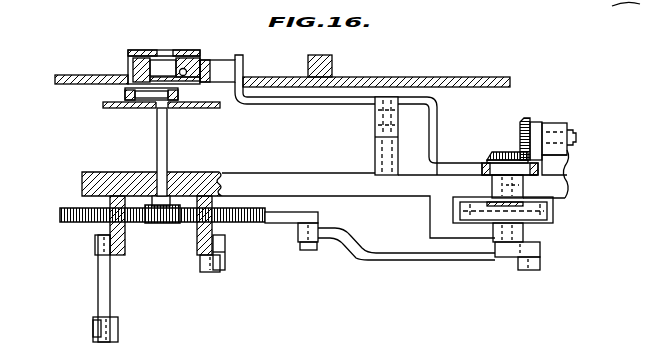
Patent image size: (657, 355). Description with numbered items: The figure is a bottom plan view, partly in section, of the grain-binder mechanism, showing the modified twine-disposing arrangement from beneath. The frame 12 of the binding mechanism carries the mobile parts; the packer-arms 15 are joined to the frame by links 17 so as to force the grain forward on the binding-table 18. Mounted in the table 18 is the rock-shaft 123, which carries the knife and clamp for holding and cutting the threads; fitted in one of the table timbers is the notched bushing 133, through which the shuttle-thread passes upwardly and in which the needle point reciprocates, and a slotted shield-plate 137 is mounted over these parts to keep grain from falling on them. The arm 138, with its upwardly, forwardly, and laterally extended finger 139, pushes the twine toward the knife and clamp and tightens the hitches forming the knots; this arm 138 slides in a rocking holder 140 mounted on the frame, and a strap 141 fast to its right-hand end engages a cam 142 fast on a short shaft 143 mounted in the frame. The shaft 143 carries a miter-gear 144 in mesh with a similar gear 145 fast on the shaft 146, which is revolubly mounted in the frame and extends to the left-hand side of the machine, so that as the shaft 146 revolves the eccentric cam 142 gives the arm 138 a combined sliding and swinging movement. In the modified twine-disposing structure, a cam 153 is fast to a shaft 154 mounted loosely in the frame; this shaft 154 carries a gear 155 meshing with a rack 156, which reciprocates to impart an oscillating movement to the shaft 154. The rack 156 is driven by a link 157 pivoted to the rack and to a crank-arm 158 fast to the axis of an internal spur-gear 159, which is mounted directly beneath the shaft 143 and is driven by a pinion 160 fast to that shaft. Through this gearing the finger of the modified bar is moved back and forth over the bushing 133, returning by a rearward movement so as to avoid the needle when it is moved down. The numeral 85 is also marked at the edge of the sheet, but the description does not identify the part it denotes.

The frame 12 is at (272, 173).
The packer-arms 15 is at (112, 328).
The links 17 is at (103, 282).
The binding-table 18 is at (271, 78).
The lever 85 is at (629, 15).
The rock-shaft 123 is at (218, 71).
The notched bushing 133 is at (163, 62).
The slotted shield-plate 137 is at (194, 52).
The arm 138 is at (437, 130).
The finger 139 is at (236, 55).
The rocking holder 140 is at (375, 111).
The strap 141 is at (558, 165).
The cam 142 is at (486, 186).
The short shaft 143 is at (540, 182).
The miter-gear 144 is at (495, 152).
The miter-gear 145 is at (529, 119).
The shaft 146 is at (590, 127).
The cam 153 is at (146, 96).
The shaft 154 is at (168, 148).
The gear 155 is at (162, 225).
The rack 156 is at (279, 231).
The link 157 is at (376, 259).
The crank-arm 158 is at (540, 248).
The internal spur-gear 159 is at (550, 221).
The pinion 160 is at (553, 203).